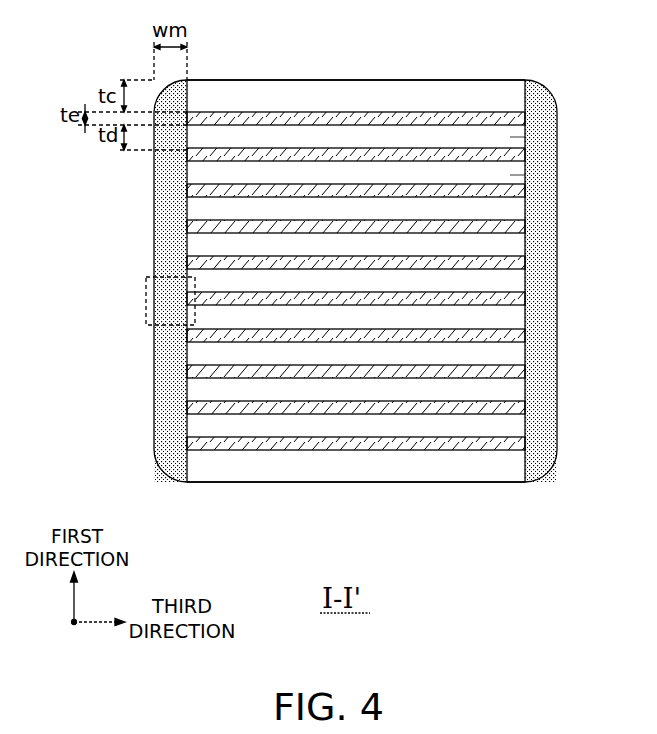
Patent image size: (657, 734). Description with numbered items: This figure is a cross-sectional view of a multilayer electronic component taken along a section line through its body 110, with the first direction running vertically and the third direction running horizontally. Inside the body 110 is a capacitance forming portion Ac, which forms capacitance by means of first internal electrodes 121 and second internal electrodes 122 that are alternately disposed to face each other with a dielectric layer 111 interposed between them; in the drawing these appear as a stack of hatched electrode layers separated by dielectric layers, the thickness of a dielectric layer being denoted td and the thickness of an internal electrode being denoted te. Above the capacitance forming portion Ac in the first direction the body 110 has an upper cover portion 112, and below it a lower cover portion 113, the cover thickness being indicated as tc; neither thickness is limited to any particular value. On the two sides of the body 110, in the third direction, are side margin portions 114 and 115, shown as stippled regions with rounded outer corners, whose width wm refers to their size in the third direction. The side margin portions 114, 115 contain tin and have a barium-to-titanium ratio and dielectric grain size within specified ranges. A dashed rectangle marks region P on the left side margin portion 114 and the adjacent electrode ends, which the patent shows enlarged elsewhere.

The body 110 is at (346, 80).
The dielectric layer 111 is at (517, 175).
The upper cover portion 112 is at (266, 95).
The lower cover portion 113 is at (338, 475).
The side margin portion 114 is at (168, 357).
The side margin portion 115 is at (545, 355).
The first internal electrode 121 is at (426, 120).
The second internal electrode 122 is at (453, 157).
The capacitance forming portion Ac is at (170, 250).
The region P is at (146, 300).